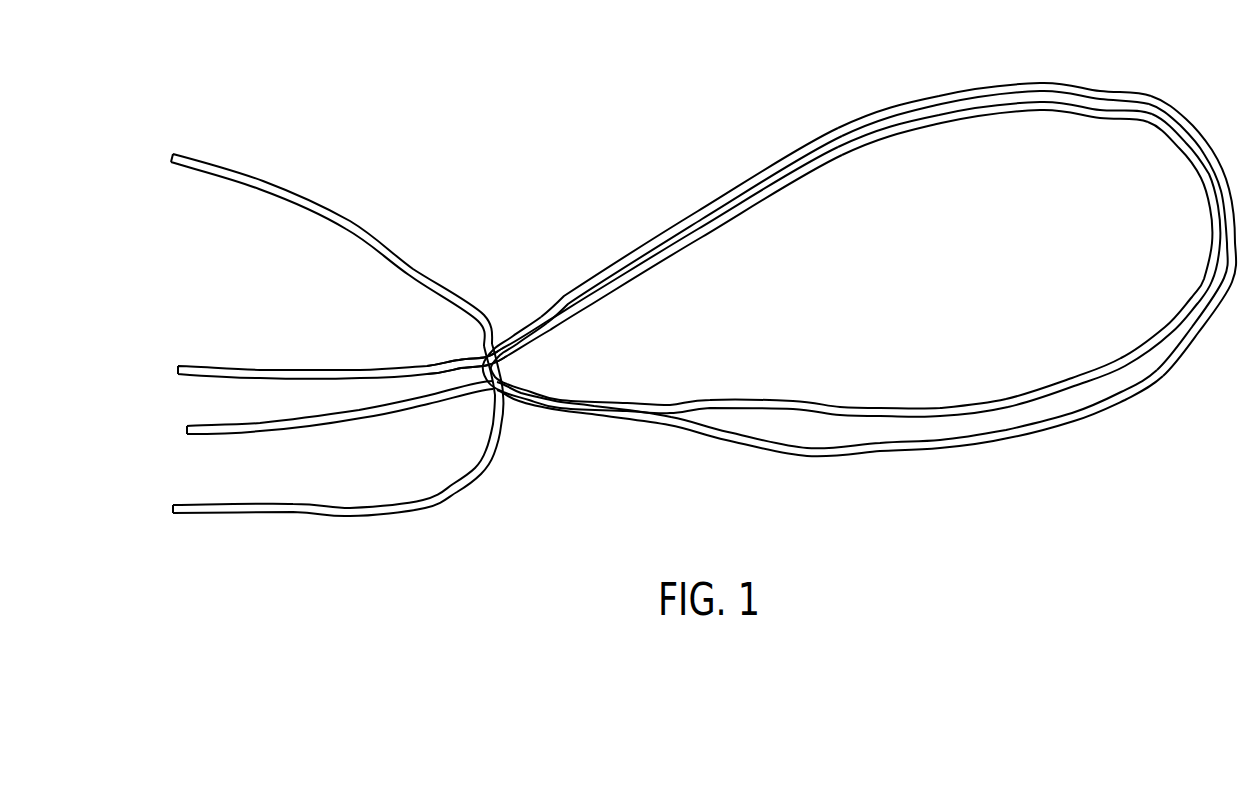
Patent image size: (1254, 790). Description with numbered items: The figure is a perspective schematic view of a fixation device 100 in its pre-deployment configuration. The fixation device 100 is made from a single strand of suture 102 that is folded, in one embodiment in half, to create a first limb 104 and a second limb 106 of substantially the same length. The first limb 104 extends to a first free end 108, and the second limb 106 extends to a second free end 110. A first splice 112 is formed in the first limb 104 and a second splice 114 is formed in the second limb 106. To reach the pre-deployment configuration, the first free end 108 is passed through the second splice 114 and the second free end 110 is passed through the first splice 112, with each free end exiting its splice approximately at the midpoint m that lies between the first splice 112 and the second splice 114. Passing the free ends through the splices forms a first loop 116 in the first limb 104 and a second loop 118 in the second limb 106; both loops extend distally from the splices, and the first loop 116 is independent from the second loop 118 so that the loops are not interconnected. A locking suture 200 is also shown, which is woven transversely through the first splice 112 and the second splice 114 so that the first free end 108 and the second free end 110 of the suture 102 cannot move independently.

The fixation device 100 is at (486, 106).
The suture 102 is at (611, 168).
The first limb 104 is at (443, 367).
The second limb 106 is at (386, 412).
The first free end 108 is at (188, 434).
The second free end 110 is at (188, 367).
The first splice 112 is at (571, 405).
The second splice 114 is at (558, 298).
The first loop 116 is at (973, 98).
The second loop 118 is at (803, 449).
The locking suture 200 is at (180, 158).
The midpoint m is at (507, 358).